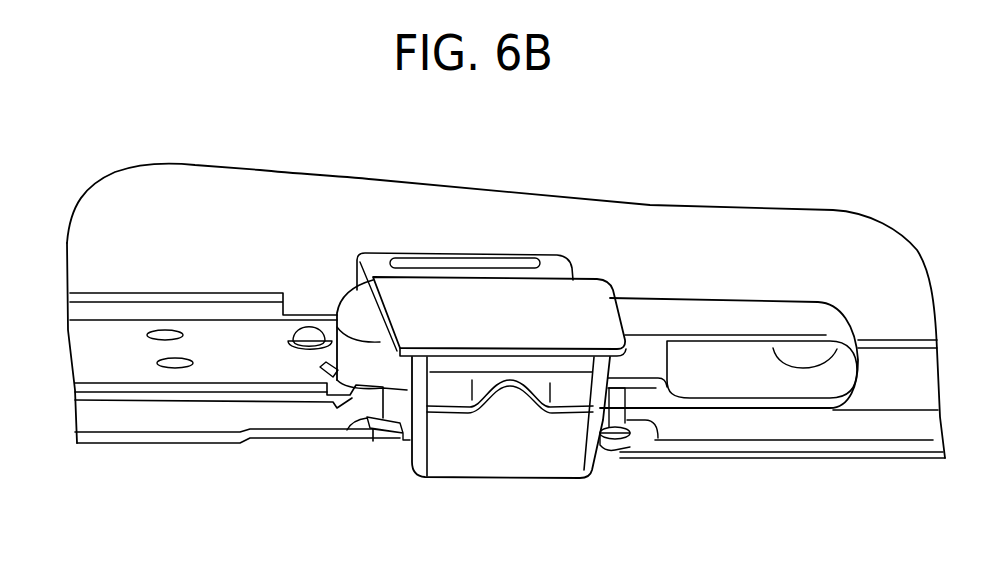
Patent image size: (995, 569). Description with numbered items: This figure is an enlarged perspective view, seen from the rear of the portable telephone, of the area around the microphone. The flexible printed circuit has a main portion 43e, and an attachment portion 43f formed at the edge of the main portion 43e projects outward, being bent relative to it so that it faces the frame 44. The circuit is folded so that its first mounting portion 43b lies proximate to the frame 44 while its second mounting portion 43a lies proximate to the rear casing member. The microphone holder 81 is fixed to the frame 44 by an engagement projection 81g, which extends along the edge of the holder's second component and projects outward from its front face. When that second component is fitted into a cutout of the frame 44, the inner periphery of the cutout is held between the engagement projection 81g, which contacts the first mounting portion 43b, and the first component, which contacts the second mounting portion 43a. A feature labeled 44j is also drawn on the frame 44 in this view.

The second mounting portion 43a is at (575, 235).
The first mounting portion 43b is at (302, 435).
The main portion 43e is at (903, 323).
The attachment portion 43f is at (767, 322).
The frame 44 is at (258, 415).
The latch tab 44j is at (372, 433).
The holder 81 is at (518, 462).
The engagement projection 81g is at (614, 476).